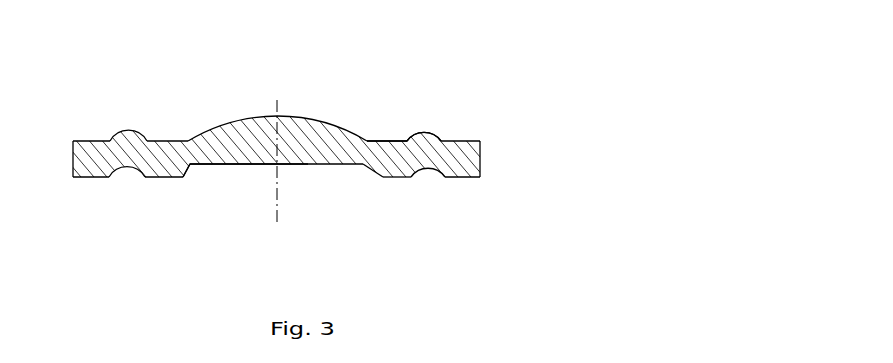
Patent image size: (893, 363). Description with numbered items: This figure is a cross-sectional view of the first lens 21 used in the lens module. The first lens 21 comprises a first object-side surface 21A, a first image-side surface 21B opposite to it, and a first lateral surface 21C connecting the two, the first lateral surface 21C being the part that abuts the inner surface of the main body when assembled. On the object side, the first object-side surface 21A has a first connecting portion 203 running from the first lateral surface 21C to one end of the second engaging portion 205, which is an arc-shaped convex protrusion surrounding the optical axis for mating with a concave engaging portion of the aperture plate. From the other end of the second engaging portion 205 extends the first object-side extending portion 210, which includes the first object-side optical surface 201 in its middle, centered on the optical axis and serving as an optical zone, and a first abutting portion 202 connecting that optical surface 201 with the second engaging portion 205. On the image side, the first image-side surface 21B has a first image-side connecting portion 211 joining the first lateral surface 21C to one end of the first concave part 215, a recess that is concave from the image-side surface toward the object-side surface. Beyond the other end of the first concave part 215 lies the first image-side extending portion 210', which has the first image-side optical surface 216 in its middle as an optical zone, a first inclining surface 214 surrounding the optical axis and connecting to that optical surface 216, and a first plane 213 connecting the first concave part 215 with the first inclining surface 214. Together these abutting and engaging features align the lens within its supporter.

The first lens 21 is at (291, 31).
The first object-side surface 21A is at (295, 103).
The first image-side surface 21B is at (286, 203).
The first lateral surface 21C is at (481, 153).
The first object-side optical surface 201 is at (302, 118).
The first abutting portion 202 is at (380, 141).
The first connecting portion 203 is at (95, 141).
The second engaging portion 205 is at (128, 131).
The first object-side extending portion 210 is at (392, 81).
The first image-side extending portion 210' is at (208, 222).
The first image-side connecting portion 211 is at (88, 178).
The first plane 213 is at (158, 179).
The first inclining surface 214 is at (188, 180).
The first concave part 215 is at (427, 168).
The first image-side optical surface 216 is at (300, 166).